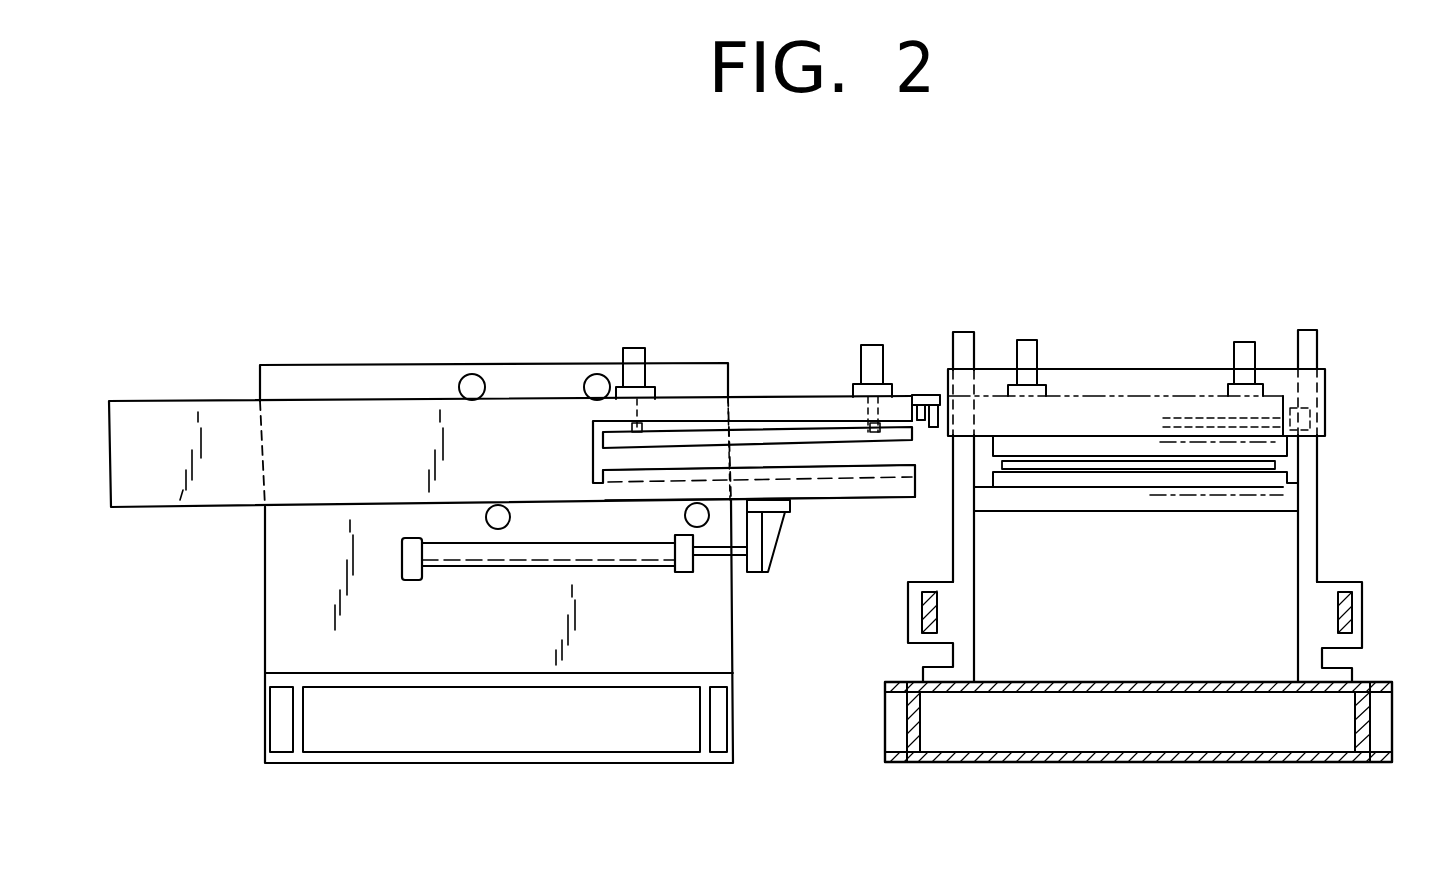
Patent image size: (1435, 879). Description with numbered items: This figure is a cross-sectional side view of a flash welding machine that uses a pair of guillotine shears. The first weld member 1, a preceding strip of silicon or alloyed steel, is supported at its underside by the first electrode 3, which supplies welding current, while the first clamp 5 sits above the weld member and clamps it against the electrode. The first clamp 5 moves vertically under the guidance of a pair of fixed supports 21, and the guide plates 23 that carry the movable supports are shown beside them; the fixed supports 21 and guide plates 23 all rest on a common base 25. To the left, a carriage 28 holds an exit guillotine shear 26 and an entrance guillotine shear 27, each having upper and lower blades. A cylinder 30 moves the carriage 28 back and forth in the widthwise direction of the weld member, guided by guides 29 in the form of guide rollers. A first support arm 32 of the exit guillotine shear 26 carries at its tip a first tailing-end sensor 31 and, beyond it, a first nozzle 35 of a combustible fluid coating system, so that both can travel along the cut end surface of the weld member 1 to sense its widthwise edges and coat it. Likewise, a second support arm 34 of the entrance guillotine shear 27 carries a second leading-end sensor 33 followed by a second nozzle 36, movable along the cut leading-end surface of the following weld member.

The first weld member 1 is at (1133, 467).
The first electrode 3 is at (1253, 477).
The first clamp 5 is at (1127, 447).
The fixed supports 21 is at (975, 528).
The guide plates 23 is at (922, 617).
The base 25 is at (1093, 717).
The exit guillotine shear 26 is at (780, 438).
The entrance guillotine shear 27 is at (780, 438).
The carriage 28 is at (383, 378).
The guides 29 is at (480, 375).
The cylinder 30 is at (637, 567).
The first tailing-end sensor 31 is at (922, 424).
The first support arm 32 is at (903, 393).
The second leading-end sensor 33 is at (922, 424).
The second support arm 34 is at (903, 393).
The first nozzle 35 is at (935, 428).
The second nozzle 36 is at (935, 428).